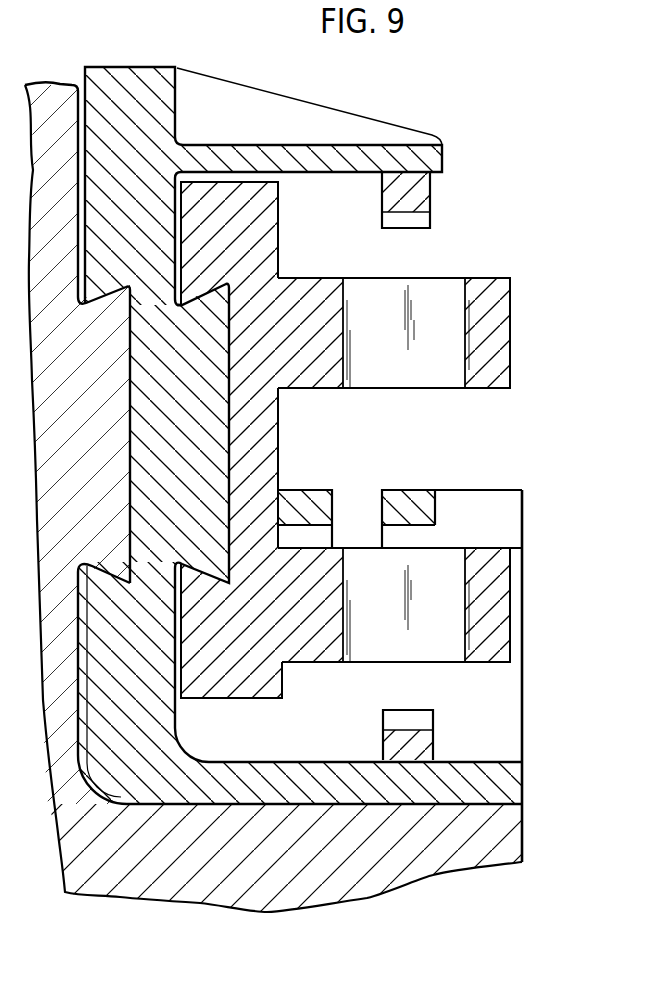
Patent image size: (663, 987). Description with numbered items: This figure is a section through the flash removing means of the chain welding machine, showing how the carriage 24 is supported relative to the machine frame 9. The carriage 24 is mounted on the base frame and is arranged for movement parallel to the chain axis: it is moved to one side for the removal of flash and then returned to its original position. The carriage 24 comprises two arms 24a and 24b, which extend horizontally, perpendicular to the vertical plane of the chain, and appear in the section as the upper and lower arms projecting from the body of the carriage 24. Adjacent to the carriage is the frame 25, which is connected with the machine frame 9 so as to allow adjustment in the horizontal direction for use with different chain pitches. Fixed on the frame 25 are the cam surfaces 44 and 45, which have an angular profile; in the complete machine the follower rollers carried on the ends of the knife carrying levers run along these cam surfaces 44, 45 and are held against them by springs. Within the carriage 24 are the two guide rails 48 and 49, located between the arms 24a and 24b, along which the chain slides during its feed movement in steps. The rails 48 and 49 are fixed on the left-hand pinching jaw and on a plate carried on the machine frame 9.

The machine frame 9 is at (370, 862).
The carriage 24 is at (385, 462).
The arm 24a is at (500, 335).
The arm 24b is at (500, 612).
The frame 25 is at (157, 766).
The cam surface 44 is at (424, 200).
The cam surface 45 is at (427, 723).
The guide rail 48 is at (302, 500).
The guide rail 49 is at (402, 503).